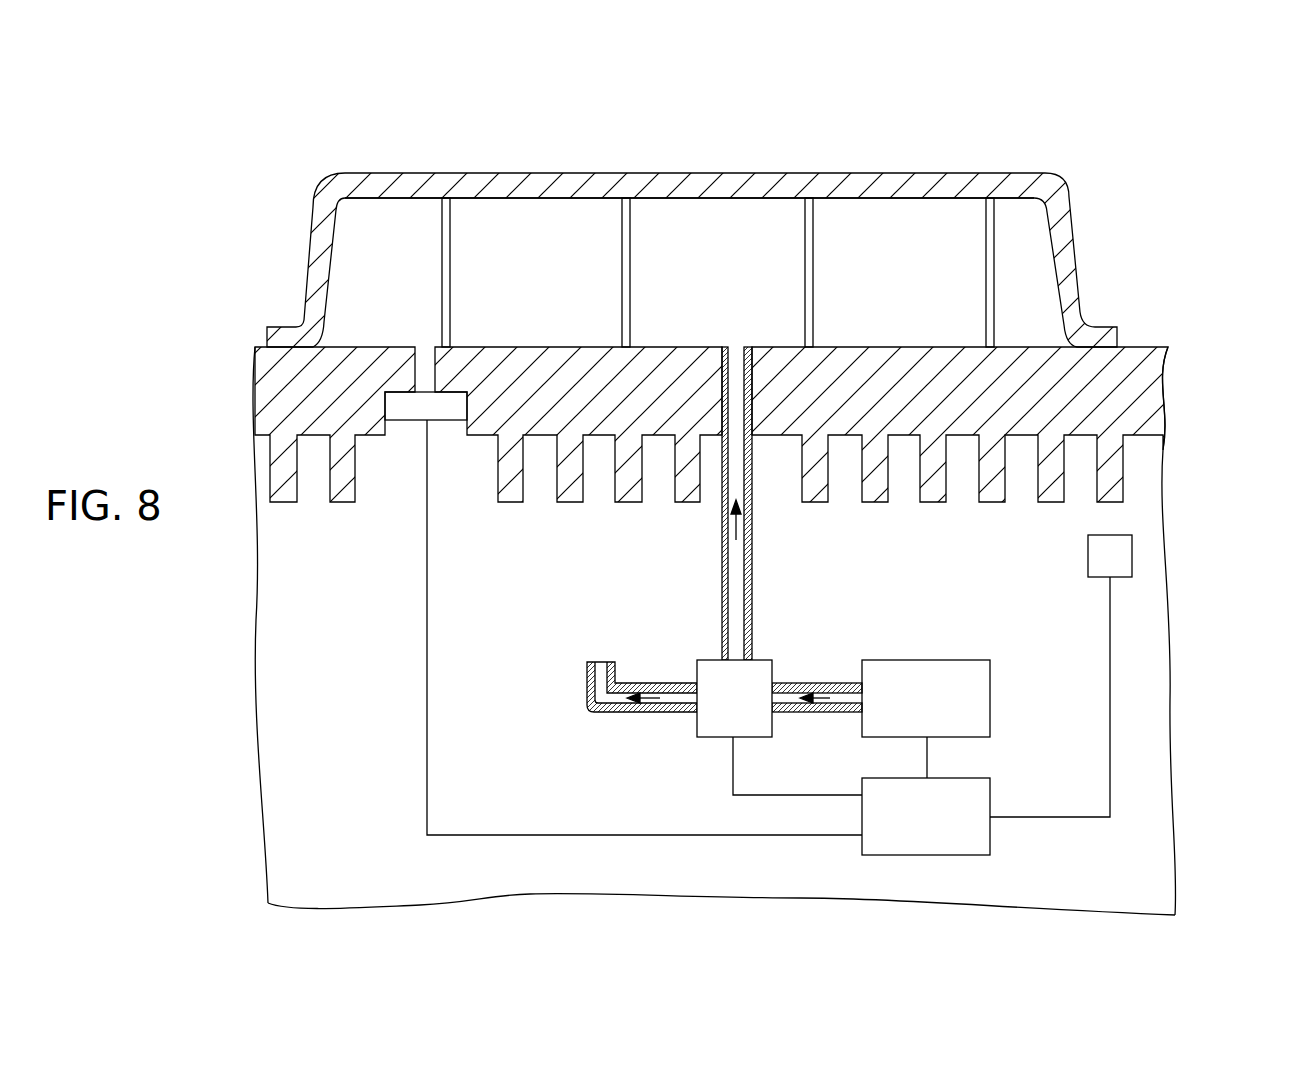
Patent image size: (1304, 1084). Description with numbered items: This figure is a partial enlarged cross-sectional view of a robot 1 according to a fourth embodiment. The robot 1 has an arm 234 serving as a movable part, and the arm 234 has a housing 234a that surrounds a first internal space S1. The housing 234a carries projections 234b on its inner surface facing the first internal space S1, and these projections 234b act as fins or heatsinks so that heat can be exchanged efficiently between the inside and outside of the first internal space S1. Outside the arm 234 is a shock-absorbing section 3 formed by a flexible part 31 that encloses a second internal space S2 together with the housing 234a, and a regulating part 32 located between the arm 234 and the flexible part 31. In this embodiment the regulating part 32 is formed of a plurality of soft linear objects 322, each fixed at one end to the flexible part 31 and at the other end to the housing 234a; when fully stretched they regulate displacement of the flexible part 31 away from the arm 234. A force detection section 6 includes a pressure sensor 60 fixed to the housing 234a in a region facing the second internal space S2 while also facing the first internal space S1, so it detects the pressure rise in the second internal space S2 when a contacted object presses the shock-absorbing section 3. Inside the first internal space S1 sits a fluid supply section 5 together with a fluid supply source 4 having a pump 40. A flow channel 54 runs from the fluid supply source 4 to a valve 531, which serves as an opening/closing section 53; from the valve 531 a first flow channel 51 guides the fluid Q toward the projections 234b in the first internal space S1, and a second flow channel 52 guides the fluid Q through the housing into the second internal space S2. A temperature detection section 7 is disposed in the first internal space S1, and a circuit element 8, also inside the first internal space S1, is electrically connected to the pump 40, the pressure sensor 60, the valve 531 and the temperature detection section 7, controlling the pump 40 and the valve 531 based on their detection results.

The robot 1 is at (1102, 121).
The shock-absorbing section 3 is at (1027, 160).
The flexible part 31 is at (558, 187).
The regulating part 32 is at (442, 232).
The linear objects 322 is at (698, 210).
The second internal space S2 is at (729, 232).
The arm 234 is at (1148, 343).
The housing 234a is at (660, 418).
The projections 234b is at (570, 483).
The force detection section 6 is at (442, 410).
The pressure sensor 60 is at (439, 445).
The fluid supply section 5 is at (675, 747).
The first flow channel 51 is at (652, 683).
The second flow channel 52 is at (752, 568).
The opening/closing section 53 is at (714, 737).
The valve 531 is at (722, 749).
The flow channel 54 is at (812, 712).
The fluid Q is at (820, 690).
The fluid supply source 4 is at (955, 660).
The pump 40 is at (941, 671).
The temperature detection section 7 is at (1132, 553).
The circuit element 8 is at (955, 856).
The first internal space S1 is at (1147, 655).